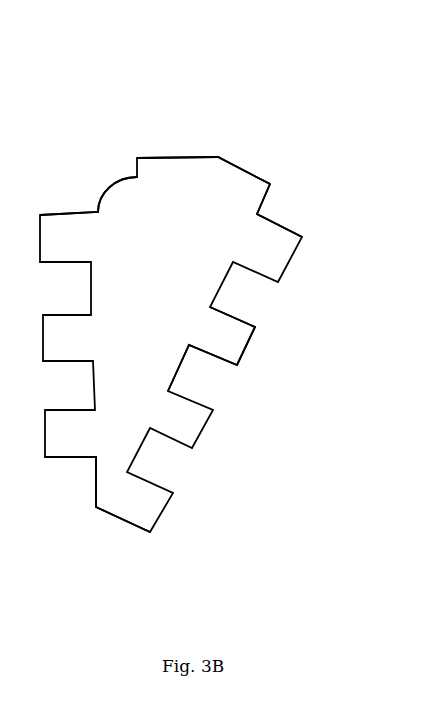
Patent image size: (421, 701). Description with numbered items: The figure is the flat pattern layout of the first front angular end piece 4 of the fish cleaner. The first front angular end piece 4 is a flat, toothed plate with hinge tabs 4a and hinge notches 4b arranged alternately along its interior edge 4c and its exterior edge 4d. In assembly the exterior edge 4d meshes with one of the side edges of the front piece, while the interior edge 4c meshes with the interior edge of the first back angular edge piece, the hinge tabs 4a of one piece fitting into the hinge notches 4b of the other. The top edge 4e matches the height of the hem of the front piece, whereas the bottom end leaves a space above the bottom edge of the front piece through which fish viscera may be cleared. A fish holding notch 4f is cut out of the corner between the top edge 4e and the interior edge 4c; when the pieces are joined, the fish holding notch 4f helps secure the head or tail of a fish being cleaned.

The first front angular end piece 4 is at (169, 232).
The hinge tabs 4a is at (248, 338).
The hinge notches 4b is at (183, 358).
The interior edge 4c is at (93, 495).
The exterior edge 4d is at (257, 214).
The top edge 4e is at (218, 157).
The fish holding notch 4f is at (98, 210).